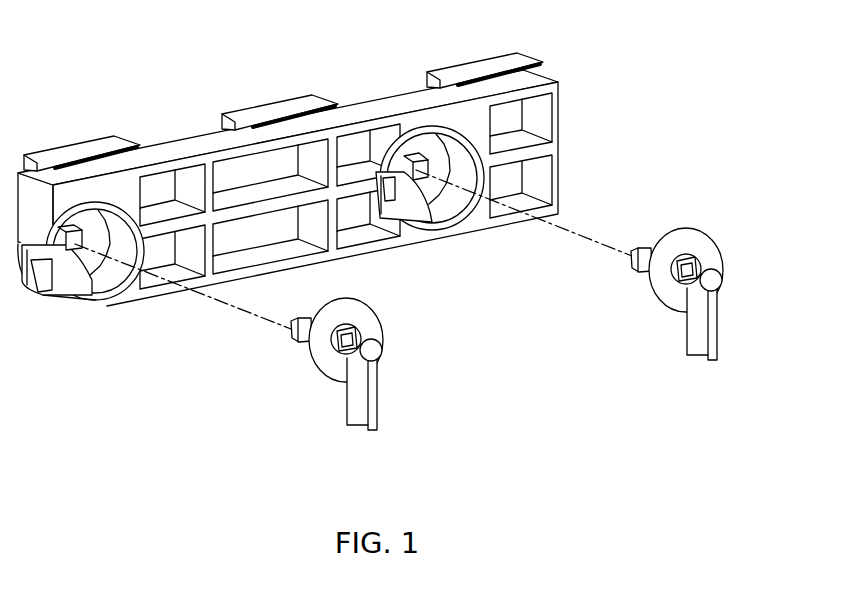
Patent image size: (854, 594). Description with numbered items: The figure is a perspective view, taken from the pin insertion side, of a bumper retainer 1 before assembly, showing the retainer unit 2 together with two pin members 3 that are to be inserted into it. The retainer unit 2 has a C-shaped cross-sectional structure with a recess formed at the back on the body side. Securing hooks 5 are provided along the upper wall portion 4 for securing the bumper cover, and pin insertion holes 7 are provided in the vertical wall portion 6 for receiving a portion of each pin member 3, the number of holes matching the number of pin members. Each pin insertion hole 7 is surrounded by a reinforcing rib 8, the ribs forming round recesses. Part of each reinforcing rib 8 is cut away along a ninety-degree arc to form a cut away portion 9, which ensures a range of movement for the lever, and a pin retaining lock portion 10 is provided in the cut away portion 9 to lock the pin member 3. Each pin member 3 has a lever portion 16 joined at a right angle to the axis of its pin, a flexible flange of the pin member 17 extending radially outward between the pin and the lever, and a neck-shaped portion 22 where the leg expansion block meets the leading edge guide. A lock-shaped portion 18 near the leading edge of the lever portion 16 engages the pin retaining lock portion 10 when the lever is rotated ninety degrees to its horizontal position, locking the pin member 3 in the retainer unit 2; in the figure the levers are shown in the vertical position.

The bumper retainer 1 is at (191, 82).
The retainer unit 2 is at (320, 185).
The pin member 3 is at (500, 333).
The upper wall portion 4 is at (391, 106).
The securing hook 5 is at (90, 150).
The vertical wall portion 6 is at (498, 127).
The pin insertion hole 7 is at (88, 266).
The reinforcing rib 8 is at (271, 246).
The cut away portion 9 is at (70, 296).
The pin retaining lock portion 10 is at (48, 296).
The lever portion 16 is at (503, 369).
The flexible flange of the pin member 17 is at (322, 367).
The lock-shaped portion 18 is at (347, 397).
The neck-shaped portion 22 is at (307, 315).